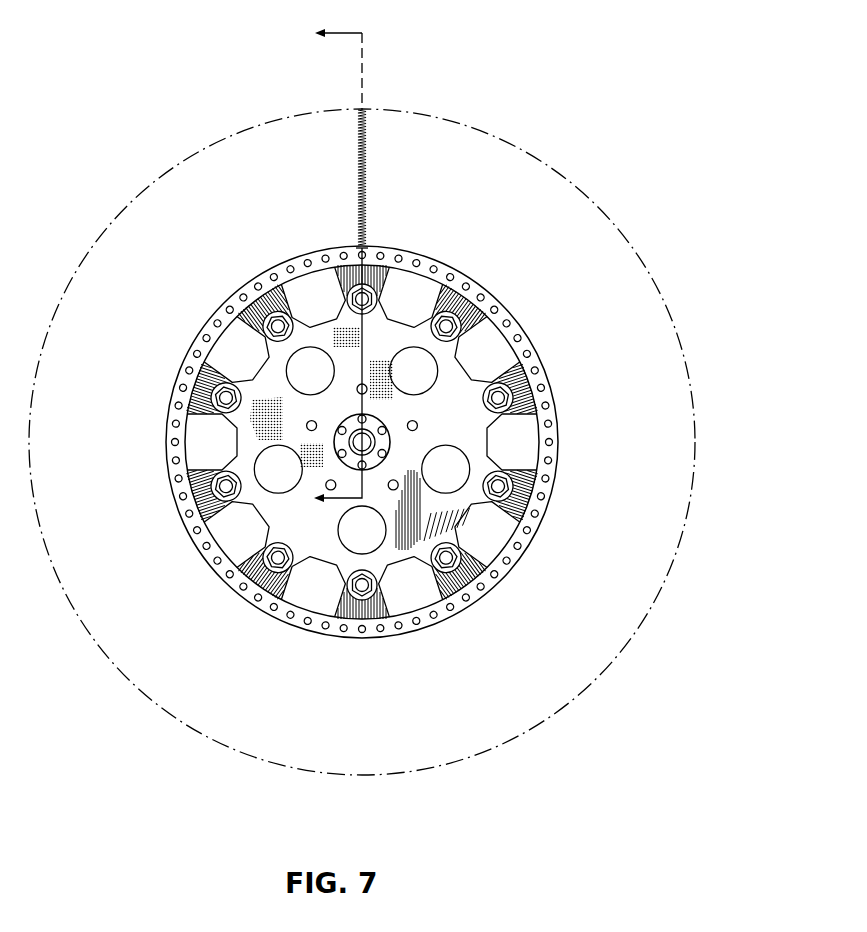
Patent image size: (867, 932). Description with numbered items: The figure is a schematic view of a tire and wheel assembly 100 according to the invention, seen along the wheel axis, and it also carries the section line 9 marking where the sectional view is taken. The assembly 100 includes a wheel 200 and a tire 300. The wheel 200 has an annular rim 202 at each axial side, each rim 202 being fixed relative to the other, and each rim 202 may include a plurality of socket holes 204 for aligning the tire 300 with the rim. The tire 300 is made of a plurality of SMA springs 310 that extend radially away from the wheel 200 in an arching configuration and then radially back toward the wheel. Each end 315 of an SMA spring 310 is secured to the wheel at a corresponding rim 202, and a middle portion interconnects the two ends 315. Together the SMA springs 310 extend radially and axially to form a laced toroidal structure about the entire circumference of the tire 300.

The assembly 100 is at (108, 98).
The wheel 200 is at (534, 331).
The annular rim 202 is at (217, 326).
The socket holes 204 is at (441, 270).
The tire 300 is at (484, 116).
The SMA spring 310 is at (354, 165).
The end 315 is at (365, 250).
The section line 9- 9 is at (328, 268).